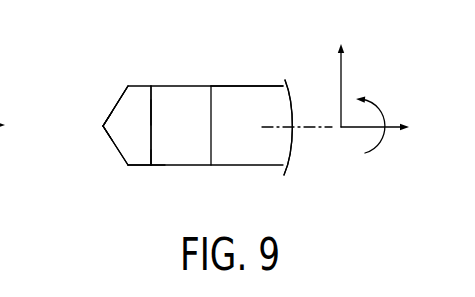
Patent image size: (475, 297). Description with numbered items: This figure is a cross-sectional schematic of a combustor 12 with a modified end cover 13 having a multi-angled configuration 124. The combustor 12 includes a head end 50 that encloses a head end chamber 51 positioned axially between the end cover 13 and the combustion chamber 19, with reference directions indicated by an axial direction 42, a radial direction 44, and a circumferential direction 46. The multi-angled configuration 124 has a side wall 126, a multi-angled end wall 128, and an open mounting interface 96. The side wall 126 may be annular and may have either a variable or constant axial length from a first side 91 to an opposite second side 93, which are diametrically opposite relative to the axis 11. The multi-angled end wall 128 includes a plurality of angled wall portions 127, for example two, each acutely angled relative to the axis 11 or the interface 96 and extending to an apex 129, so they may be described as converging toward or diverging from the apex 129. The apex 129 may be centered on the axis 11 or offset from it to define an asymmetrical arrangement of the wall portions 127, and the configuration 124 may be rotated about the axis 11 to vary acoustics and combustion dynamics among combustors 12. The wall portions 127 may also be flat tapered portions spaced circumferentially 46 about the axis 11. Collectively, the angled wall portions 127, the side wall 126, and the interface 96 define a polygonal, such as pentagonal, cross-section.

The axis 11 is at (297, 128).
The combustor 12 is at (263, 50).
The end cover 13 is at (90, 99).
The combustion chamber 19 is at (249, 135).
The axial direction 42 is at (358, 128).
The radial direction 44 is at (340, 89).
The circumferential direction 46 is at (379, 104).
The head end 50 is at (183, 68).
The head end chamber 51 is at (190, 135).
The first side 91 is at (151, 165).
The second side 93 is at (150, 87).
The open mounting interface 96 is at (152, 123).
The multi-angled configuration 124 is at (86, 139).
The side wall 126 is at (140, 165).
The angled wall portions 127 is at (114, 106).
The multi-angled end wall 128 is at (108, 153).
The apex 129 is at (101, 125).